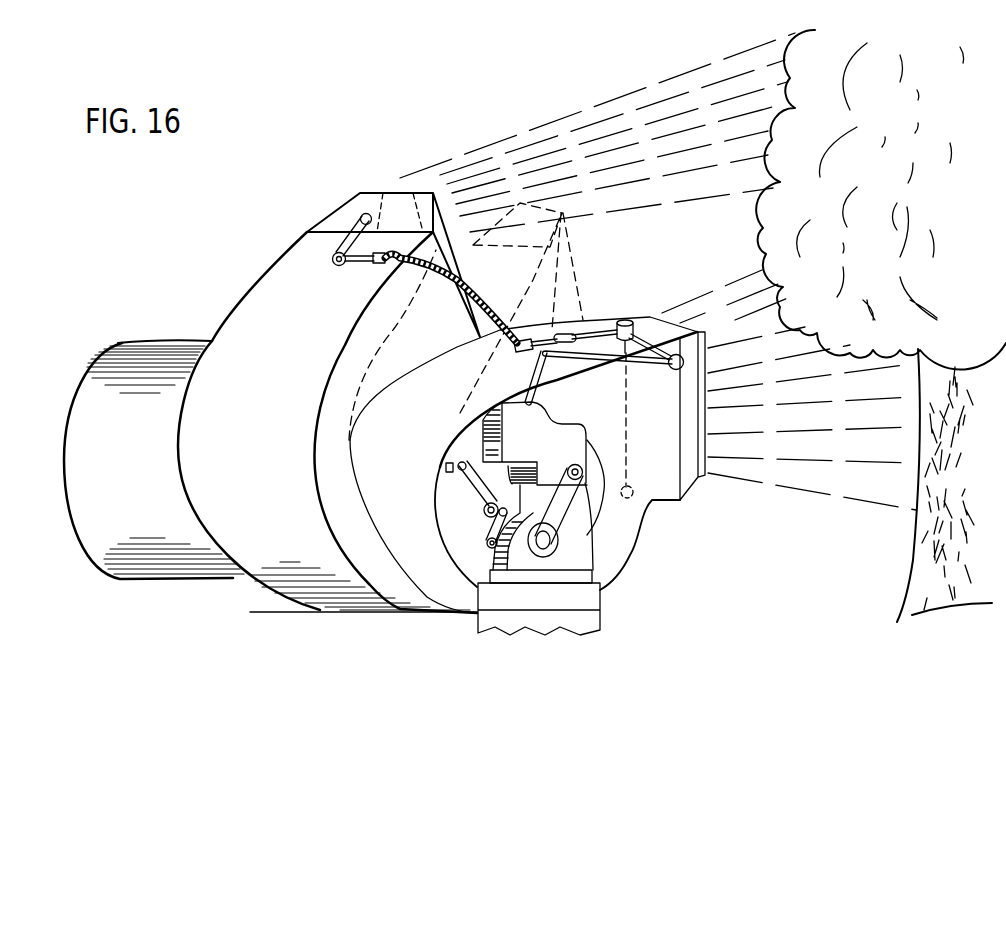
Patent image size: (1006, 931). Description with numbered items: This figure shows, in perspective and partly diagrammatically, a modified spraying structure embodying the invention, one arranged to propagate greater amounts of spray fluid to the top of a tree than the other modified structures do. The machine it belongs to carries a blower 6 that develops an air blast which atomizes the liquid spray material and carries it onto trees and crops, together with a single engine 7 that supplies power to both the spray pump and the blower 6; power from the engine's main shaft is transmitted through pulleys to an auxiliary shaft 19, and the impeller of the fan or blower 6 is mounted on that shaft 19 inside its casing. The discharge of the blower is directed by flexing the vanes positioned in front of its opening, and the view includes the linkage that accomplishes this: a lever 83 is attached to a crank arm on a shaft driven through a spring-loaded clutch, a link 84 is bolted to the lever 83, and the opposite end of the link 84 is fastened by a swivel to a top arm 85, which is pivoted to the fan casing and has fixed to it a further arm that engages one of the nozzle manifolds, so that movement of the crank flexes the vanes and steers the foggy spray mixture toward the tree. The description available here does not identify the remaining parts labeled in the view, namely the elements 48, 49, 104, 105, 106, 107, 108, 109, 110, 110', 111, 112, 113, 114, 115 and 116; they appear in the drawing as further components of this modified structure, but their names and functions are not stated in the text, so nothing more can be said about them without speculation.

The engine 7 is at (152, 342).
The housing 109 is at (270, 295).
The bracket 108 is at (343, 213).
The eye bolt 107 is at (336, 254).
The cable clamp 105 is at (383, 268).
The cable 106 is at (480, 297).
The link 104 is at (583, 340).
The top arm 85 is at (688, 330).
The link 84 is at (592, 366).
The lever 83 is at (543, 383).
The blower 6 is at (630, 557).
The block 49 is at (560, 433).
The auxiliary shaft 19 is at (568, 467).
The rotor 110 is at (579, 498).
The pedestal 111 is at (562, 558).
The base 110' is at (562, 597).
The pivot 116 is at (448, 462).
The link 115 is at (477, 493).
The pivot 114 is at (503, 493).
The link 113 is at (491, 533).
The pivot 112 is at (487, 545).
The box 48 is at (688, 477).